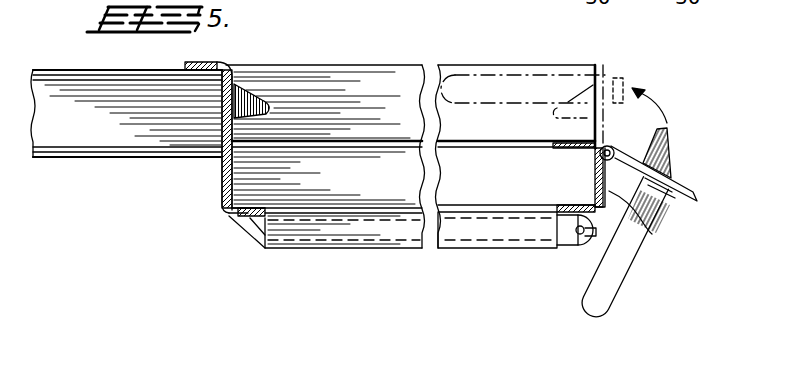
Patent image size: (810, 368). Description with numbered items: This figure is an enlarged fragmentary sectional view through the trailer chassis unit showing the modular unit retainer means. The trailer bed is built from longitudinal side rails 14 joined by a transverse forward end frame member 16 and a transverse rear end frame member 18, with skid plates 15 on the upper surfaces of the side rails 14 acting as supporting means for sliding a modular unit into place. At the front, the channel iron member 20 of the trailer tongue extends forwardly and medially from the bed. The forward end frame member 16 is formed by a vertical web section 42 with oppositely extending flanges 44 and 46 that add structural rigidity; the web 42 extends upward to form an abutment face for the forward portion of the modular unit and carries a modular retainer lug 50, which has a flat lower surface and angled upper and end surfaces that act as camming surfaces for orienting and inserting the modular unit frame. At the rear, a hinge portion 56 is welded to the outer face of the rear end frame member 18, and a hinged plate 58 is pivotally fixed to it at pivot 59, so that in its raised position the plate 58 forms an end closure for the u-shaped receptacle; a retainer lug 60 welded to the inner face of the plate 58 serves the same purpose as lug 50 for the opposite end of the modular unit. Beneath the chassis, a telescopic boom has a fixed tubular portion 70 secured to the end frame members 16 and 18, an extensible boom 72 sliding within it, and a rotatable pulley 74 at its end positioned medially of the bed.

The longitudinal side rail 14 is at (364, 190).
The skid plate 15 is at (380, 137).
The transverse forward end frame member 16 is at (222, 199).
The transverse rear end frame member 18 is at (594, 178).
The channel iron member 20 is at (77, 90).
The vertical web section 42 is at (222, 166).
The flange 44 is at (212, 64).
The flange 46 is at (248, 231).
The modular retainer lug 50 is at (250, 103).
The hinge portion 56 is at (647, 236).
The hinged plate 58 is at (680, 184).
The pivot 59 is at (611, 145).
The retainer lug 60 is at (668, 130).
The fixed boom portion 70 is at (489, 250).
The extensible boom 72 is at (564, 240).
The rotatable pulley 74 is at (580, 247).